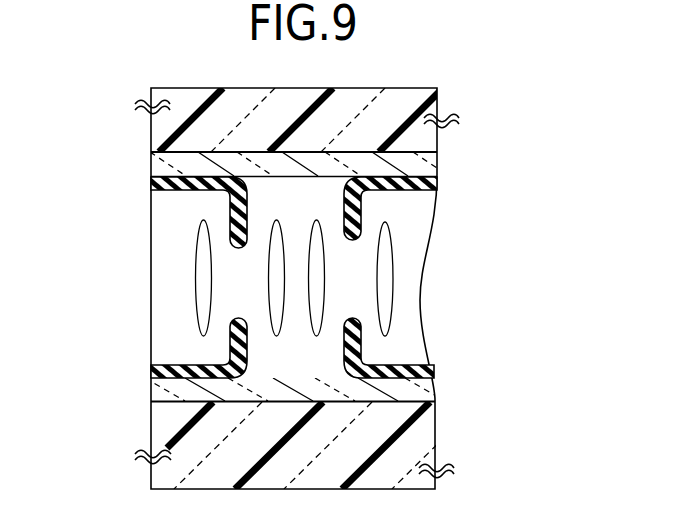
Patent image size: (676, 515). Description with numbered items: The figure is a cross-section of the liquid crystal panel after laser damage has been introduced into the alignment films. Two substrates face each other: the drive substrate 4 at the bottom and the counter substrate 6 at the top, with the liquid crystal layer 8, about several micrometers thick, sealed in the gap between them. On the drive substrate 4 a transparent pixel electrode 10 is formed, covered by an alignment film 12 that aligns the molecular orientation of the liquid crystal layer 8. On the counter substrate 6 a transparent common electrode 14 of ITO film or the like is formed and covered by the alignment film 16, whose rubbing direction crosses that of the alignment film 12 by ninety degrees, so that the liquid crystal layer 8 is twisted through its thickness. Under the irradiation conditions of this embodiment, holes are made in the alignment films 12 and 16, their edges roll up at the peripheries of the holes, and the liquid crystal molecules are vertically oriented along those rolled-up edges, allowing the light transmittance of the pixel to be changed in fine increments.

The drive substrate 4 is at (425, 442).
The counter substrate 6 is at (437, 94).
The liquid crystal layer 8 is at (413, 280).
The pixel electrode 10 is at (420, 390).
The alignment film 12 is at (150, 368).
The common electrode 14 is at (423, 159).
The alignment film 16 is at (151, 183).